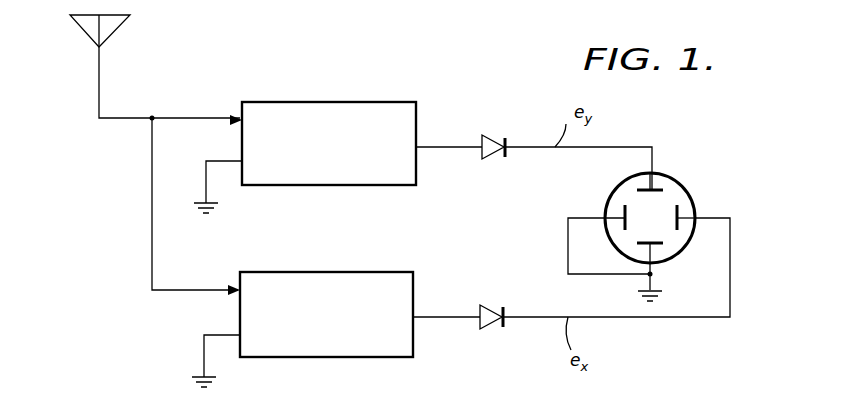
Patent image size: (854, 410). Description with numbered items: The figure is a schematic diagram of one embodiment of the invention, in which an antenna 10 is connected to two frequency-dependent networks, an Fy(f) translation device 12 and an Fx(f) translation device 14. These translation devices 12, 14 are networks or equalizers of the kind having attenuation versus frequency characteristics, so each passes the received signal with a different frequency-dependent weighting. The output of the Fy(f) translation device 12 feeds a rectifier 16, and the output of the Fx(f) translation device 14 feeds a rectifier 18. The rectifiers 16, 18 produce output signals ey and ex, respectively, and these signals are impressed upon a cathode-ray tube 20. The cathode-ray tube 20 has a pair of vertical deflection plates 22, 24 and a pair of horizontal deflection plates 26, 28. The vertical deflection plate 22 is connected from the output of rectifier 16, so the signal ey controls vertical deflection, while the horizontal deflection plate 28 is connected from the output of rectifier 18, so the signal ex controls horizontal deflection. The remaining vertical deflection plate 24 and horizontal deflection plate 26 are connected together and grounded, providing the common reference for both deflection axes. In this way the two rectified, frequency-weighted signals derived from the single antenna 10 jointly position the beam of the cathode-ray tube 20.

The antenna 10 is at (85, 37).
The Fy(f) translation device 12 is at (316, 102).
The Fx(f) translation device 14 is at (315, 272).
The rectifier 16 is at (495, 134).
The rectifier 18 is at (491, 305).
The cathode-ray tube 20 is at (692, 189).
The vertical deflection plate 22 is at (660, 188).
The vertical deflection plate 24 is at (660, 247).
The horizontal deflection plate 26 is at (619, 210).
The horizontal deflection plate 28 is at (683, 210).